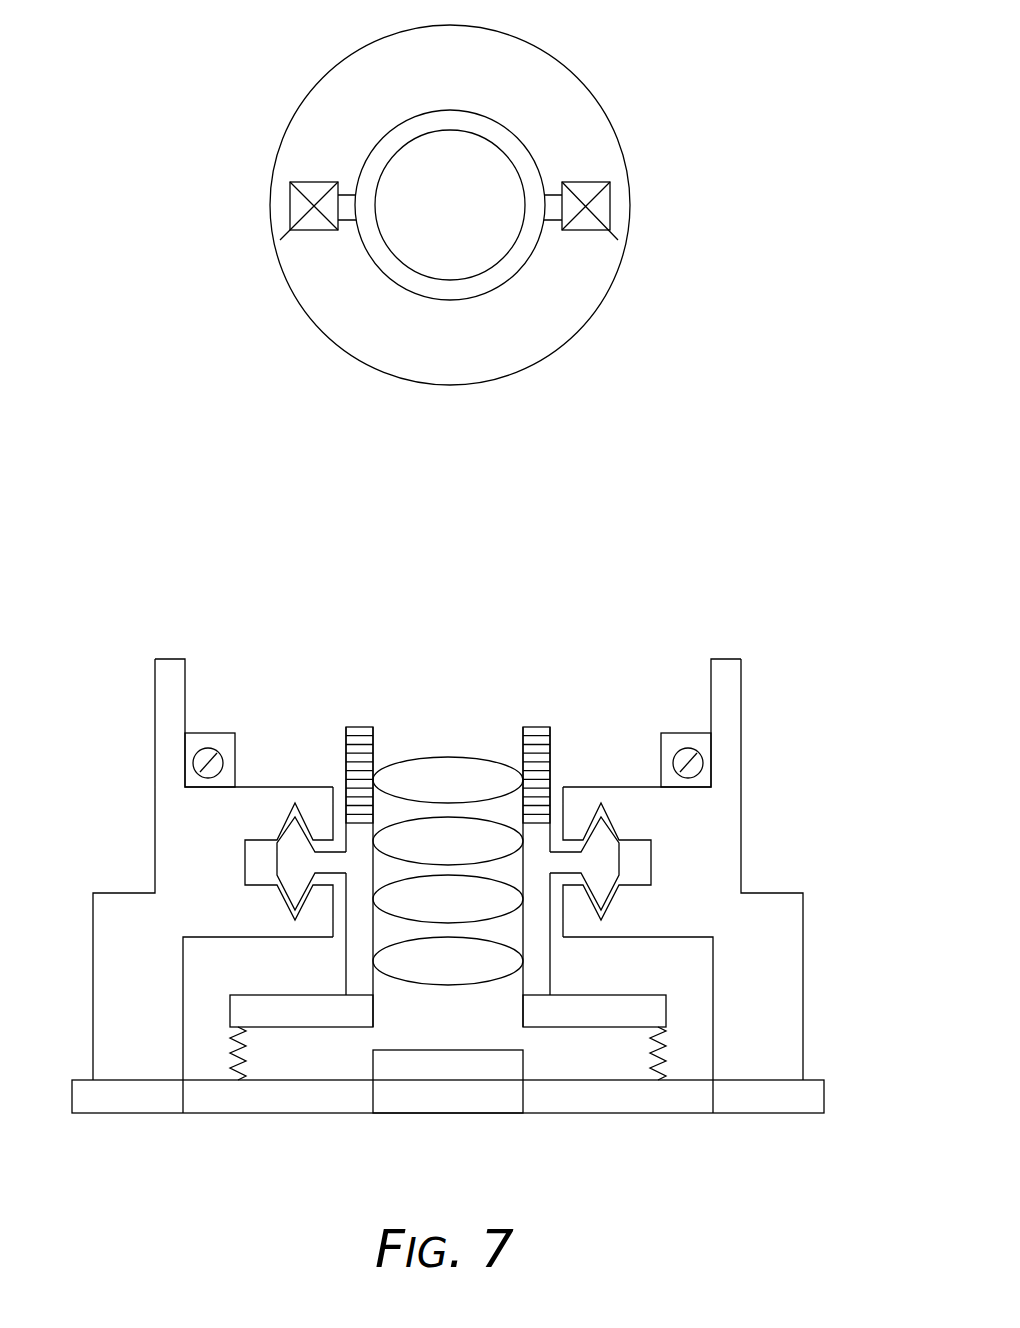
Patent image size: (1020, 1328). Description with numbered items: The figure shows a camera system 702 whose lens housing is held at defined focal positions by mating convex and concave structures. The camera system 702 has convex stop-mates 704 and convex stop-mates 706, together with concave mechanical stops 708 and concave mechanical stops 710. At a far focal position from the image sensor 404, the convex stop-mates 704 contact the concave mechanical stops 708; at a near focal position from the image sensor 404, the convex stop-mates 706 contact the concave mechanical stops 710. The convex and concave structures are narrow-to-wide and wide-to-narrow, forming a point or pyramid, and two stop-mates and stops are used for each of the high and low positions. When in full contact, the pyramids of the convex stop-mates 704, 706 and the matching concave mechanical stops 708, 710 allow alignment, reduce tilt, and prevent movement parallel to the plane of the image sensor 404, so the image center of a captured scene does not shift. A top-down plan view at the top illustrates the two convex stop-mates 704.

The camera system 702 is at (770, 63).
The convex stop-mates 704 is at (298, 850).
The convex stop-mates 706 is at (275, 888).
The concave mechanical stops 708 is at (295, 803).
The concave mechanical stops 710 is at (602, 884).
The image sensor 404 is at (450, 1057).